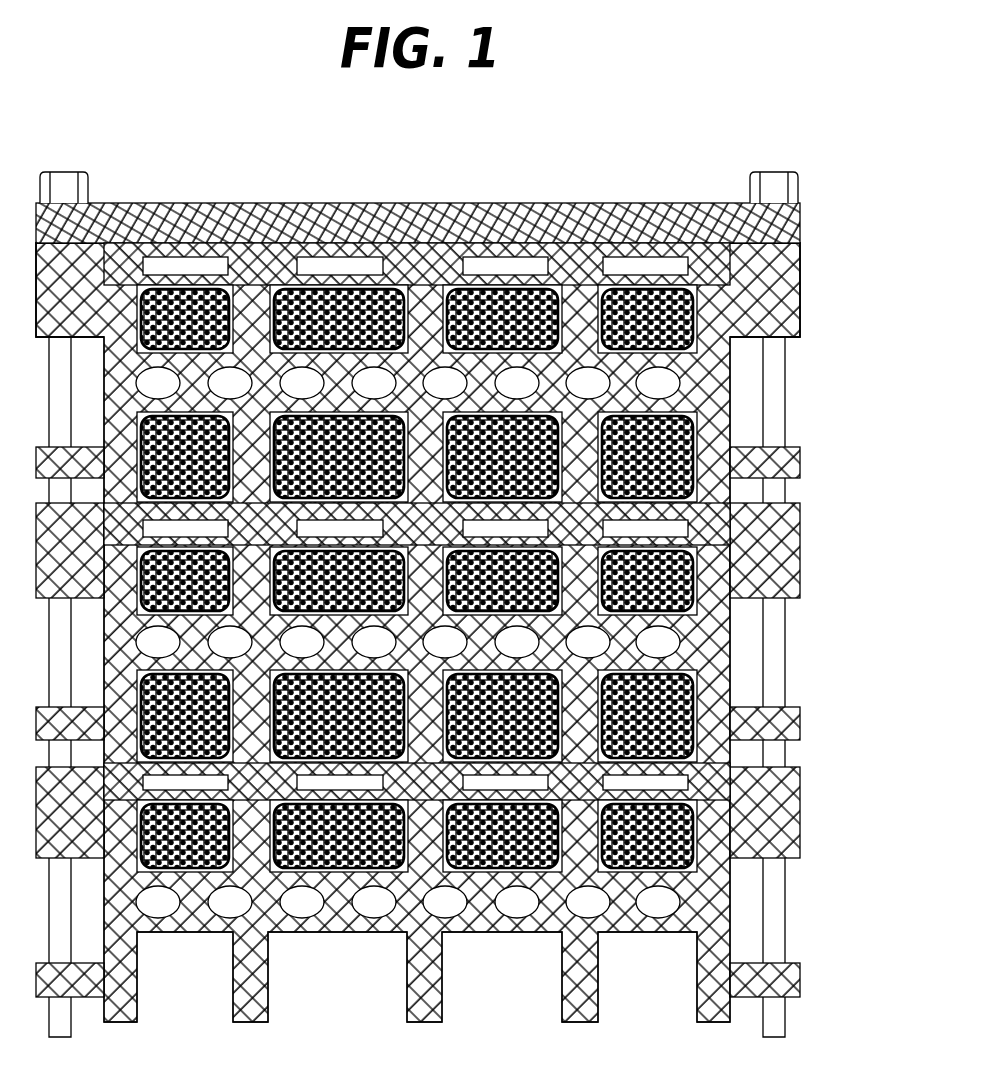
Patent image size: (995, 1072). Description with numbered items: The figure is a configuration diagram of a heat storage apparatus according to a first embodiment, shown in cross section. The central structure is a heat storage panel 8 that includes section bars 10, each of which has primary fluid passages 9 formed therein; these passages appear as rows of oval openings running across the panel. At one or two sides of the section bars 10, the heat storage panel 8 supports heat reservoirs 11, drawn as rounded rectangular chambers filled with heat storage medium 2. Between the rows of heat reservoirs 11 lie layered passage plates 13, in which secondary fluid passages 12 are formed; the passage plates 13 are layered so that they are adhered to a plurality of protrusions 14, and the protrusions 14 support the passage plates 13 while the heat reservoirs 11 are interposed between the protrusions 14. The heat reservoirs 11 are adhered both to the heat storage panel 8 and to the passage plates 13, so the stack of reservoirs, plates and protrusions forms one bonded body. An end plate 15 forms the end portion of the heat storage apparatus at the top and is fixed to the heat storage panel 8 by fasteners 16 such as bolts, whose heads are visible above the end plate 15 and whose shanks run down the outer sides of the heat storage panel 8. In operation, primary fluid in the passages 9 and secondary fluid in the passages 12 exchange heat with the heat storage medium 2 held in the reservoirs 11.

The heat storage medium 2 is at (670, 458).
The heat storage panel 8 is at (800, 268).
The primary fluid passage 9 is at (663, 383).
The section bar 10 is at (755, 306).
The heat reservoir 11 is at (703, 411).
The secondary fluid passage 12 is at (673, 528).
The passage plate 13 is at (717, 530).
The protrusion 14 is at (580, 705).
The end plate 15 is at (478, 203).
The fastener 16 is at (797, 189).